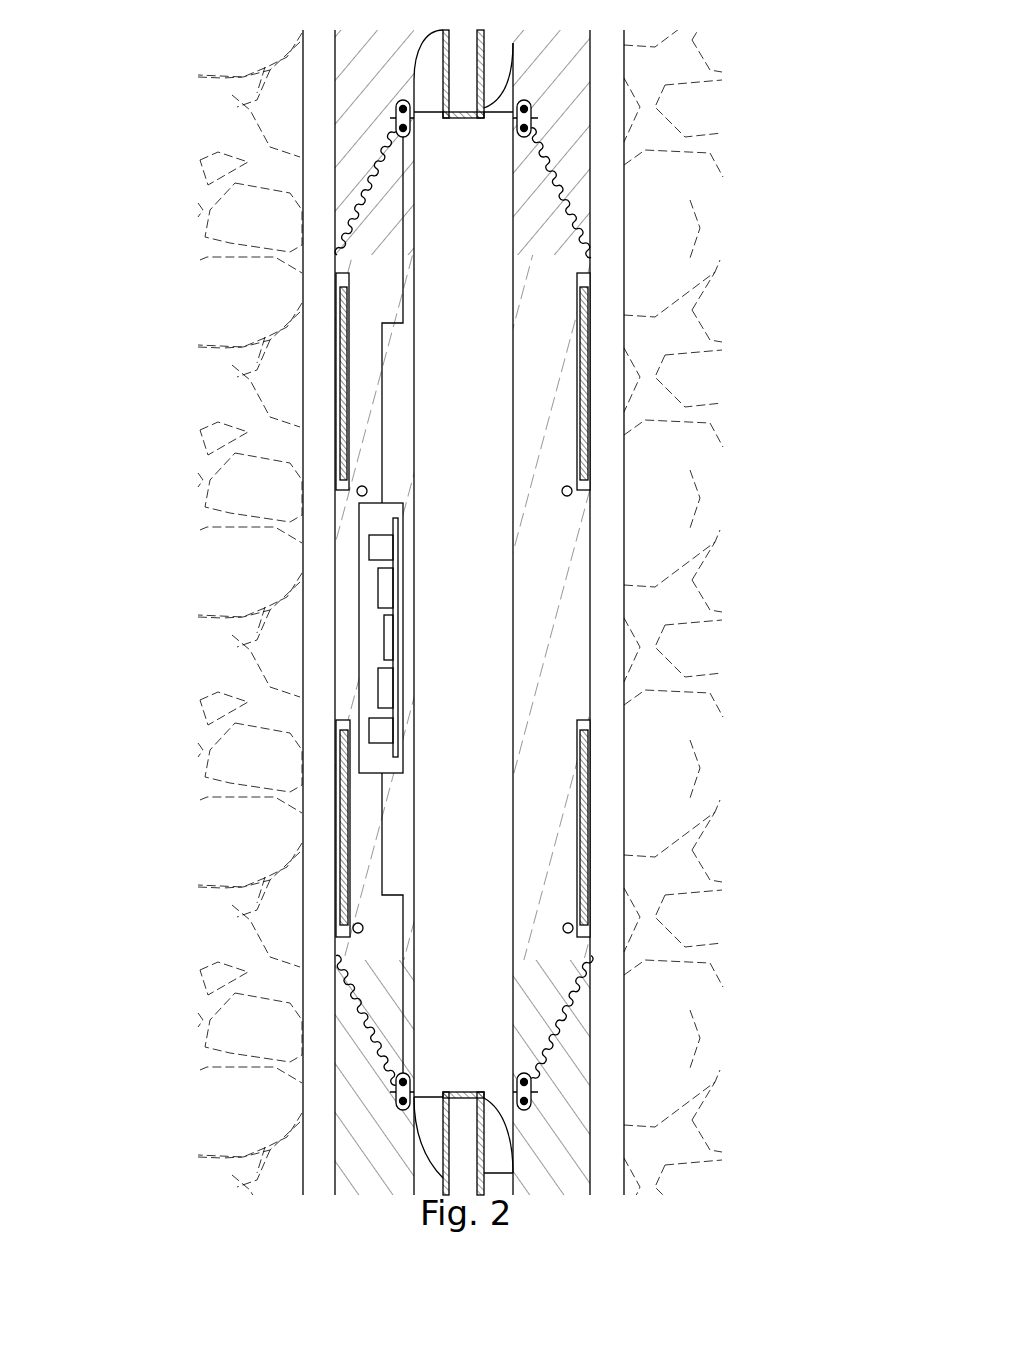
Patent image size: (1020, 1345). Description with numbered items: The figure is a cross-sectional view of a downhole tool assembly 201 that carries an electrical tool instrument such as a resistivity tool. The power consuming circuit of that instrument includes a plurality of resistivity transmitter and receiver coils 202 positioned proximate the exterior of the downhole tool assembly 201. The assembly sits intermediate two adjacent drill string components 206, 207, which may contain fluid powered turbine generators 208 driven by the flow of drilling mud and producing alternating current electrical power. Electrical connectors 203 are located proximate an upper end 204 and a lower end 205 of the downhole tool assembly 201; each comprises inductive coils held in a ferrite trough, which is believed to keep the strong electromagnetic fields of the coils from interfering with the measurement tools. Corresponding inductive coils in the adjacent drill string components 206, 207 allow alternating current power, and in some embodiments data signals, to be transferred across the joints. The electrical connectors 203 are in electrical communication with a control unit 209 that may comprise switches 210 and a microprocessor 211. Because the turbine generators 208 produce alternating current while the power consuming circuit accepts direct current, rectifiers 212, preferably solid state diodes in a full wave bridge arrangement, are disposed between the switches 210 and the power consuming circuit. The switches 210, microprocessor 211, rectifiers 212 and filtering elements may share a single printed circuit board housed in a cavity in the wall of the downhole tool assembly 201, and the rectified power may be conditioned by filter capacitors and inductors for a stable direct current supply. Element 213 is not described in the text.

The downhole tool assembly 201 is at (120, 250).
The resistivity transmitter and receiver coils 202 is at (622, 383).
The electrical connectors 203 is at (533, 128).
The upper end 204 is at (535, 222).
The lower end 205 is at (555, 953).
The drill string component 206 is at (358, 103).
The drill string component 207 is at (360, 1130).
The turbine generators 208 is at (468, 52).
The control unit 209 is at (320, 673).
The switches 210 is at (386, 730).
The microprocessor 211 is at (385, 638).
The rectifiers 212 is at (390, 692).
The pivot ring 213 is at (357, 490).